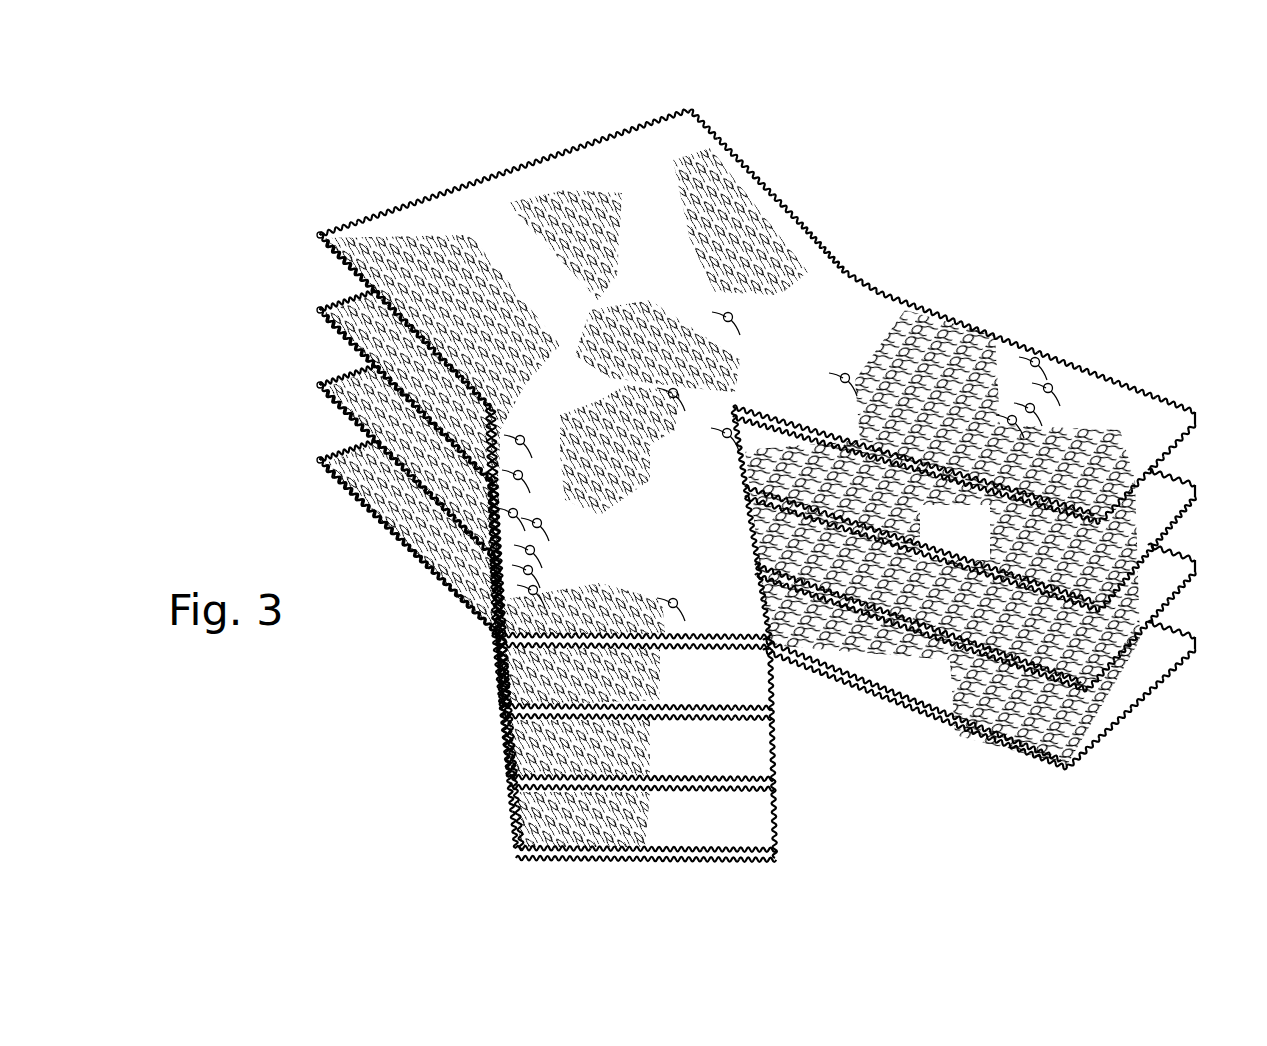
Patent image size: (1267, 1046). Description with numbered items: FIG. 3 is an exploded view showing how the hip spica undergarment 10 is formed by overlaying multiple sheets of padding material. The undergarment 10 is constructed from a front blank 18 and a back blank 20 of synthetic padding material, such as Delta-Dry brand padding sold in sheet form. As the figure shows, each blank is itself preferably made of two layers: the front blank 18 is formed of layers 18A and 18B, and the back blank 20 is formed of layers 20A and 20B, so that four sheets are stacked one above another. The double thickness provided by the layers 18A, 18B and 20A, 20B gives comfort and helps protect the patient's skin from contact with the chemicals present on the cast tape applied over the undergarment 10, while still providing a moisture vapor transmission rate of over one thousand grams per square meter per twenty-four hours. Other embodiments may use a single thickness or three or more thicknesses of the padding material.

The hip spica undergarment 10 is at (905, 103).
The front blank 18 is at (300, 228).
The layer of padding material 18A is at (468, 208).
The layer of padding material 18B is at (318, 232).
The back blank 20 is at (300, 380).
The layer of padding material 20A is at (505, 738).
The layer of padding material 20B is at (520, 830).